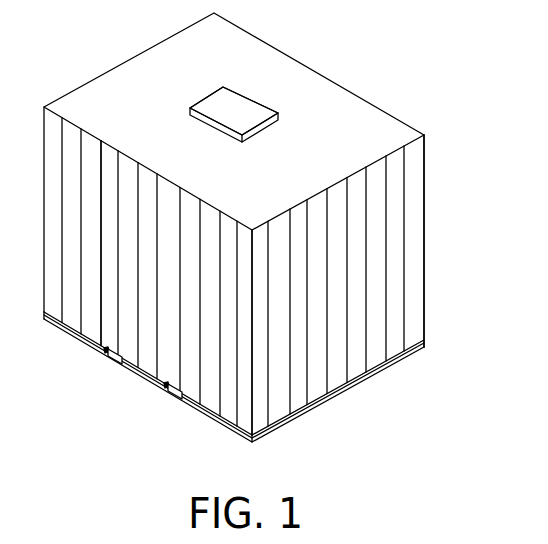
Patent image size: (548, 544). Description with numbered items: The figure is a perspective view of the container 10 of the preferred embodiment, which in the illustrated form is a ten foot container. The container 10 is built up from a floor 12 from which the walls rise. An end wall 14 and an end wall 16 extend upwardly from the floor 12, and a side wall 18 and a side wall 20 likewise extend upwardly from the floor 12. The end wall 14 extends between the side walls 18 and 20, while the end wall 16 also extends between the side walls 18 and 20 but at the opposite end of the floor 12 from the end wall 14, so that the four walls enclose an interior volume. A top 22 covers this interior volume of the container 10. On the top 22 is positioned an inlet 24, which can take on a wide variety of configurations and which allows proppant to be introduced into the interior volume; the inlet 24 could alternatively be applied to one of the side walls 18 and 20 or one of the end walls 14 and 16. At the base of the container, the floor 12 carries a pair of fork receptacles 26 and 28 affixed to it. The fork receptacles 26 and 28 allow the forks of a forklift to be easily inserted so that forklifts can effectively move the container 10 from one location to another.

The container 10 is at (396, 100).
The floor 12 is at (384, 368).
The end wall 14 is at (406, 231).
The end wall 16 is at (95, 78).
The side wall 18 is at (92, 327).
The side wall 20 is at (342, 86).
The top 22 is at (193, 91).
The inlet 24 is at (255, 118).
The fork receptacle 26 is at (173, 398).
The fork receptacle 28 is at (113, 362).